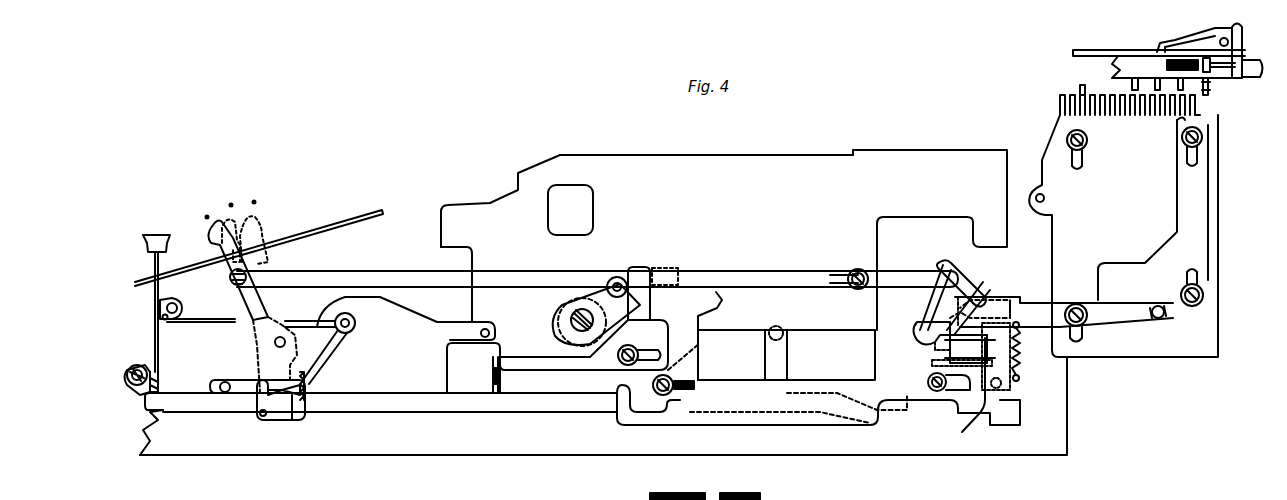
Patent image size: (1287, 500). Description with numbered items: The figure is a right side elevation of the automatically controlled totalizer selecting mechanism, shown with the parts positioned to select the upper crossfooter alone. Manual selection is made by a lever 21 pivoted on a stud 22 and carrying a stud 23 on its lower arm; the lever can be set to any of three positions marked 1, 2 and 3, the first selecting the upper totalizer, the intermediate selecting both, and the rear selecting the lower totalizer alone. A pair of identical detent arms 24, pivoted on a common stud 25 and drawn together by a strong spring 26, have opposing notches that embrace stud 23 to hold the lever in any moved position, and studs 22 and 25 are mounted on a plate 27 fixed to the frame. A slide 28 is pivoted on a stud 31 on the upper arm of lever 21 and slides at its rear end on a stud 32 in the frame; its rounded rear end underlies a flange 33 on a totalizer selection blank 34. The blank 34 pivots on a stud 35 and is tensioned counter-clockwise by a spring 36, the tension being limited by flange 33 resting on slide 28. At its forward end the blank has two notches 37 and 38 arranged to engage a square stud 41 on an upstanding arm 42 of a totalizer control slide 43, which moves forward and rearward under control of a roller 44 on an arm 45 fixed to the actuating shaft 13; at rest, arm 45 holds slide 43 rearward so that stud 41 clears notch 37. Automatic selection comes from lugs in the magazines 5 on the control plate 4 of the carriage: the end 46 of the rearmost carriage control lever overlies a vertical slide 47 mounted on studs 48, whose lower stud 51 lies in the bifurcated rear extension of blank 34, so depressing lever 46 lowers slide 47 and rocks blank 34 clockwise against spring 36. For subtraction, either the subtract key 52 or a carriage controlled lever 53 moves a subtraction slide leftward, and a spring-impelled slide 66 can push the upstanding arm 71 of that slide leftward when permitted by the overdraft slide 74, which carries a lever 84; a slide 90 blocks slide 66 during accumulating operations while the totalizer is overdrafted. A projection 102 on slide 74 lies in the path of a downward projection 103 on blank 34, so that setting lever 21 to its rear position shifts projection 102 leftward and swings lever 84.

The lever position No. 1 is at (205, 206).
The lever position No. 2 is at (231, 223).
The lever position No. 3 is at (254, 221).
The control plate 4 is at (1142, 54).
The control magazines 5 is at (1112, 60).
The actuating shaft 13 is at (571, 319).
The lever 21 is at (247, 300).
The stud 22 is at (283, 336).
The stud 23 is at (292, 412).
The detent arms 24 is at (306, 375).
The common stud 25 is at (227, 393).
The spring 26 is at (306, 388).
The plate 27 is at (316, 328).
The slide 28 is at (424, 275).
The stud 31 is at (230, 277).
The stud 32 is at (862, 258).
The flange 33 is at (946, 278).
The totalizer selection blank 34 is at (1050, 304).
The stud 35 is at (1086, 308).
The spring 36 is at (1022, 358).
The notch 37 is at (915, 333).
The notch 38 is at (933, 346).
The square stud 41 is at (985, 295).
The upstanding arm 42 is at (930, 363).
The totalizer control slide 43 is at (798, 392).
The roller 44 is at (622, 278).
The arm 45 is at (614, 325).
The lever end 46 is at (1212, 90).
The vertically disposed slide 47 is at (1200, 203).
The studs 48 is at (1205, 138).
The stud 51 is at (1160, 320).
The subtract key 52 is at (155, 234).
The carriage controlled lever 53 is at (1080, 88).
The slide 66 is at (752, 330).
The upstanding arm 71 is at (985, 350).
The overdraft slide 74 is at (970, 391).
The lever 84 is at (944, 393).
The slide 90 is at (492, 368).
The projection 102 is at (1018, 336).
The projection 103 is at (1020, 380).